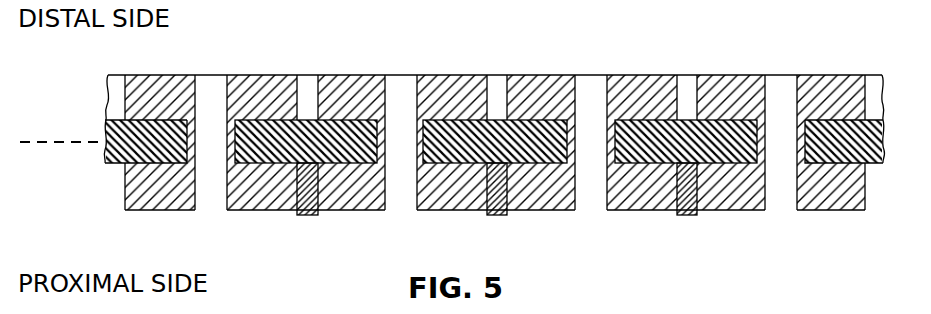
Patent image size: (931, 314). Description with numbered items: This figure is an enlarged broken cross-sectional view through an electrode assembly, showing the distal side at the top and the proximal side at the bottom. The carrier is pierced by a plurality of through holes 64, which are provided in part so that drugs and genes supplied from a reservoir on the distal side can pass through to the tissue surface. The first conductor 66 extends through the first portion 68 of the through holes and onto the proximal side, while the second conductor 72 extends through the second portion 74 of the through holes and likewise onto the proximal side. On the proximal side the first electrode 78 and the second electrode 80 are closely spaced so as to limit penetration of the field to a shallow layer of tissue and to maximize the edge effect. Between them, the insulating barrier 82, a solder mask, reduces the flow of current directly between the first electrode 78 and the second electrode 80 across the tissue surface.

The plurality of through holes 64 is at (590, 212).
The first conductor 66 is at (263, 74).
The first portion of the plurality of through holes 68 is at (208, 212).
The second conductor 72 is at (440, 74).
The second portion of the plurality of through holes 74 is at (402, 74).
The first electrode 78 is at (152, 212).
The second electrode 80 is at (367, 212).
The insulating barrier 82 is at (307, 214).